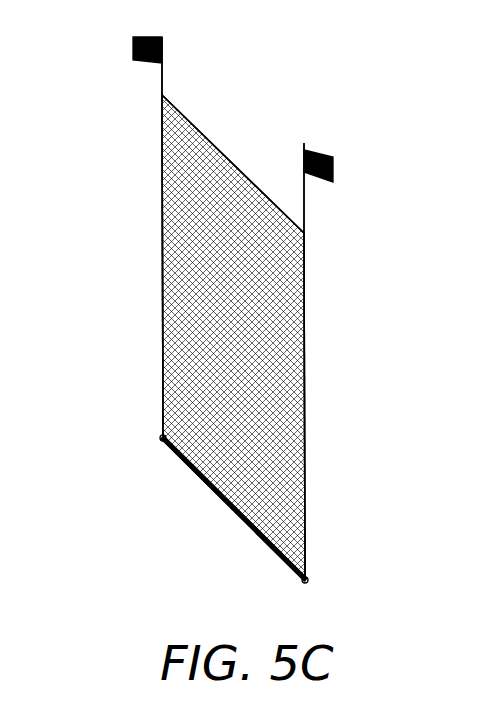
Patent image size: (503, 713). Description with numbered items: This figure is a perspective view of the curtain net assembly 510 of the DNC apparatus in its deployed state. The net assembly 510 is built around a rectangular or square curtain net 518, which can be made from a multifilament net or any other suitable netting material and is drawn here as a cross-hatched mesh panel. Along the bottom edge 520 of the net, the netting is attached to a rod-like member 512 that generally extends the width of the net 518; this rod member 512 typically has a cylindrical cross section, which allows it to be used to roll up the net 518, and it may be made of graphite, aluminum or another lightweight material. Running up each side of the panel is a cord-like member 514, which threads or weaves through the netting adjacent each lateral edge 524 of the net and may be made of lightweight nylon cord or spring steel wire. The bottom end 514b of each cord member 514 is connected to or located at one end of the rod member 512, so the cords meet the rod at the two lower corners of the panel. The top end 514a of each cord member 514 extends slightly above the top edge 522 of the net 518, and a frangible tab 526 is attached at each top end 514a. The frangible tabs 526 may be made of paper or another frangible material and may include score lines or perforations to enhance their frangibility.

The curtain net assembly 510 is at (80, 318).
The rod-like member 512 is at (246, 525).
The cord-like member 514 is at (163, 275).
The top end of cord member 514a is at (163, 64).
The bottom end of cord member 514b is at (163, 437).
The curtain net 518 is at (232, 368).
The bottom edge of net 520 is at (197, 472).
The top edge of net 522 is at (216, 146).
The lateral edge of net 524 is at (168, 202).
The frangible tab 526 is at (145, 36).